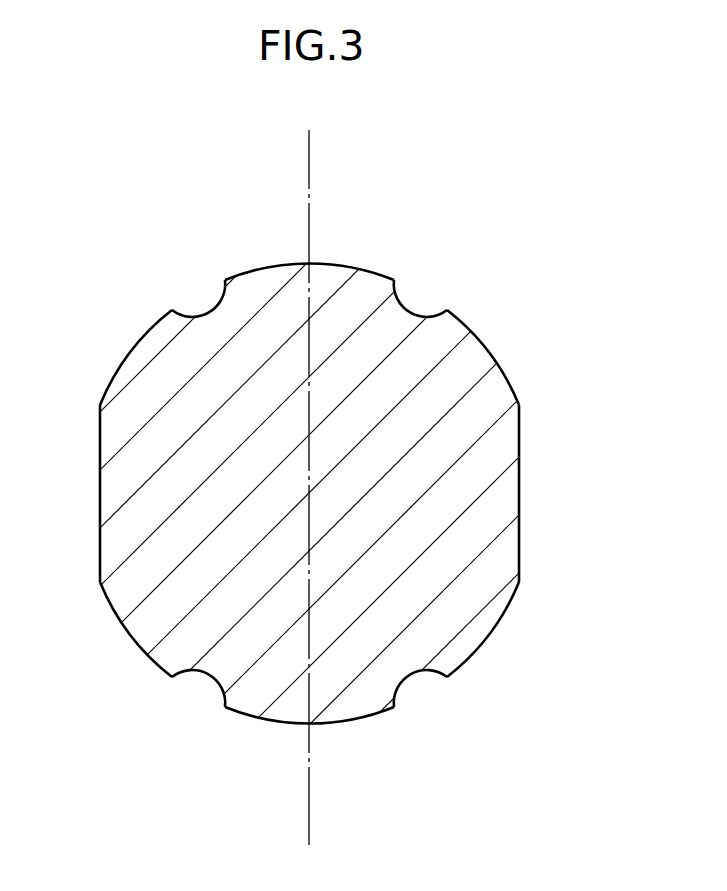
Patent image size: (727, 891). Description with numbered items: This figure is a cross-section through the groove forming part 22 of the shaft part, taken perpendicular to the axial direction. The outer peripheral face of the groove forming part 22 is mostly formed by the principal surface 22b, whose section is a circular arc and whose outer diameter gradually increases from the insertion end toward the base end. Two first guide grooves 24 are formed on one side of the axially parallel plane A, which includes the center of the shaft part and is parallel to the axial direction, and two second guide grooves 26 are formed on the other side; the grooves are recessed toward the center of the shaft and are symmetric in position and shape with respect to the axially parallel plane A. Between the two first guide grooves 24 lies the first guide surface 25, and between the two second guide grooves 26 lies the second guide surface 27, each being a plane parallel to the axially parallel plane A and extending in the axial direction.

The groove forming part 22 is at (340, 286).
The principal surface 22b is at (490, 350).
The first guide groove 24 is at (420, 300).
The first guide surface 25 is at (520, 440).
The second guide groove 26 is at (203, 309).
The second guide surface 27 is at (100, 444).
The axially parallel plane A is at (311, 152).